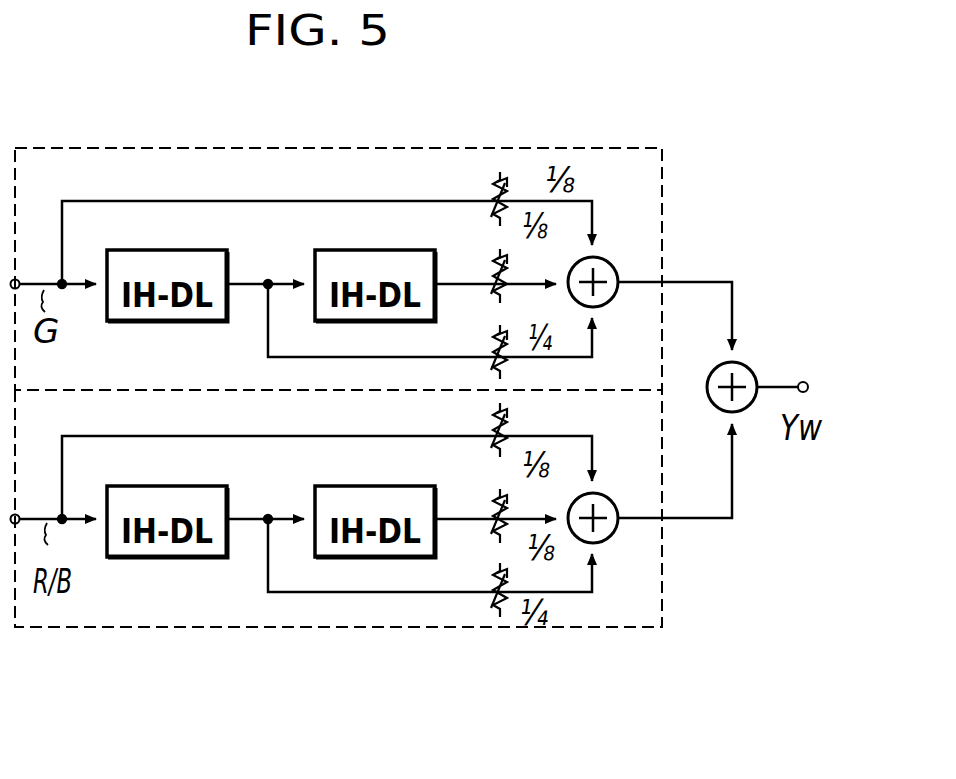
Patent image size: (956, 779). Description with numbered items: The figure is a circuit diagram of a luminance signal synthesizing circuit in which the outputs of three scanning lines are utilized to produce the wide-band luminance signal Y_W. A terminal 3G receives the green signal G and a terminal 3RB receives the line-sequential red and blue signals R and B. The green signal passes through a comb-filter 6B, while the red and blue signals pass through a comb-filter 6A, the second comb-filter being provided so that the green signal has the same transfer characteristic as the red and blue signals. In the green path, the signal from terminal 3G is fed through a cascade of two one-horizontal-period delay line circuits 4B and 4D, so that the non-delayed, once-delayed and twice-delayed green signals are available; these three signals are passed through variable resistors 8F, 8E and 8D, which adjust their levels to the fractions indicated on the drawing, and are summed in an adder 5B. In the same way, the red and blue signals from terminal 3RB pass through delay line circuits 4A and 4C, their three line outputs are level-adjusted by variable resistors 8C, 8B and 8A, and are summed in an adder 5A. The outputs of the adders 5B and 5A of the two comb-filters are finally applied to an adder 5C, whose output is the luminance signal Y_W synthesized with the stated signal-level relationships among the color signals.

The terminal 3G is at (20, 282).
The terminal 3RB is at (20, 515).
The delay line circuit 4A is at (168, 562).
The delay line circuit 4B is at (172, 323).
The delay line circuit 4C is at (338, 486).
The delay line circuit 4D is at (338, 251).
The adder 5A is at (610, 530).
The adder 5B is at (610, 270).
The adder 5C is at (745, 366).
The comb-filter 6A is at (315, 630).
The comb-filter 6B is at (318, 137).
The variable resistor 8A is at (497, 575).
The variable resistor 8B is at (499, 501).
The variable resistor 8C is at (497, 421).
The variable resistor 8D is at (497, 337).
The variable resistor 8E is at (495, 262).
The variable resistor 8F is at (495, 187).